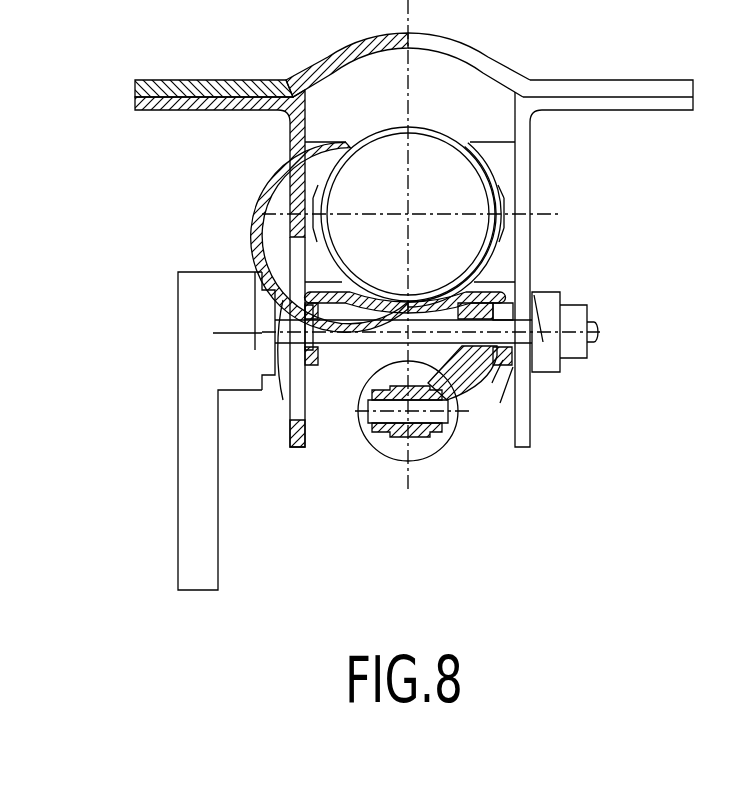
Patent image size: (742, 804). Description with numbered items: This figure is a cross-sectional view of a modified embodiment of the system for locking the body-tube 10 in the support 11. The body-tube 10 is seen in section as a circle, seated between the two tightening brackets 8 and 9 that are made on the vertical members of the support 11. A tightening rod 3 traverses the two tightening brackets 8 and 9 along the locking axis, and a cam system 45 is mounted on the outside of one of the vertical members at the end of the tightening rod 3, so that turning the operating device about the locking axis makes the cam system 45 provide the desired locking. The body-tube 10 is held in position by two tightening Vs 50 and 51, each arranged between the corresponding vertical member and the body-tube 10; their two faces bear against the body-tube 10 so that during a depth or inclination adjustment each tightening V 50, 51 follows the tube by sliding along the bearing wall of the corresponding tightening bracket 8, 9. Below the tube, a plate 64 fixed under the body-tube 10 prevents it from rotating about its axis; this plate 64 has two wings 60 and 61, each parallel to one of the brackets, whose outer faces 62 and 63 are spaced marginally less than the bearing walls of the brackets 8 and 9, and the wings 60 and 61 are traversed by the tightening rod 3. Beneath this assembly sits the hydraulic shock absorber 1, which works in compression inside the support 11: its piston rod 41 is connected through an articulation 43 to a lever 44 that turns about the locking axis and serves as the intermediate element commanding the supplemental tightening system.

The hydraulic shock absorber 1 is at (415, 463).
The tightening rod 3 is at (333, 328).
The tightening bracket 8 is at (530, 172).
The tightening bracket 9 is at (292, 170).
The body-tube 10 is at (460, 140).
The support 11 is at (181, 112).
The piston rod 41 is at (415, 437).
The articulation 43 is at (383, 413).
The lever 44 is at (468, 375).
The cam system 45 is at (200, 300).
The tightening V 50 is at (500, 157).
The tightening V 51 is at (320, 157).
The wing 60 is at (508, 360).
The wing 61 is at (290, 420).
The outer face 62 is at (533, 370).
The outer face 63 is at (290, 365).
The plate 64 is at (380, 313).